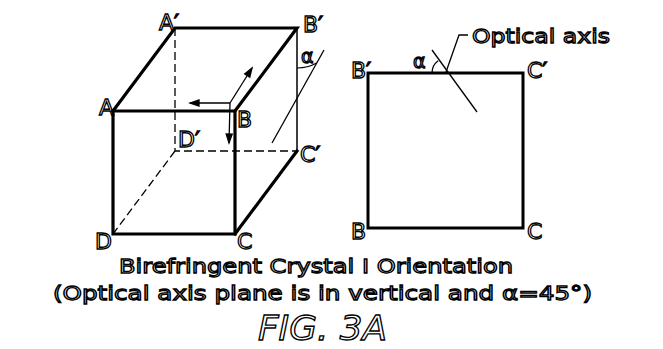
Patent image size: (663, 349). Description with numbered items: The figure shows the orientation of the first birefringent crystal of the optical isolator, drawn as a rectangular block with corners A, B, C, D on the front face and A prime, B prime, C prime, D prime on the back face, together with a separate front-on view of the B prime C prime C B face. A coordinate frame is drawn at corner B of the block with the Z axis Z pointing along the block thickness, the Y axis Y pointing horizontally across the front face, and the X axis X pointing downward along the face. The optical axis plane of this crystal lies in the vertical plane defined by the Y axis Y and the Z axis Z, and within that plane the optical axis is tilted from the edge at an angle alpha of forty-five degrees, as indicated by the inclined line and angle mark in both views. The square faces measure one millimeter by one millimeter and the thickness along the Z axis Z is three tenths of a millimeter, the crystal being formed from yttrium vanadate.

The X axis X is at (221, 125).
The Y axis Y is at (207, 91).
The Z axis Z is at (241, 78).